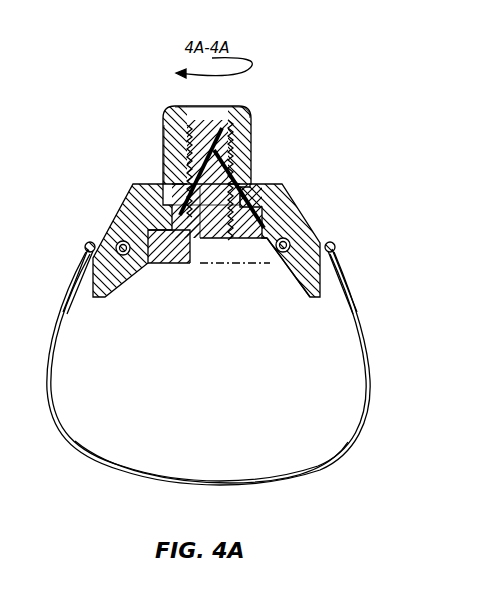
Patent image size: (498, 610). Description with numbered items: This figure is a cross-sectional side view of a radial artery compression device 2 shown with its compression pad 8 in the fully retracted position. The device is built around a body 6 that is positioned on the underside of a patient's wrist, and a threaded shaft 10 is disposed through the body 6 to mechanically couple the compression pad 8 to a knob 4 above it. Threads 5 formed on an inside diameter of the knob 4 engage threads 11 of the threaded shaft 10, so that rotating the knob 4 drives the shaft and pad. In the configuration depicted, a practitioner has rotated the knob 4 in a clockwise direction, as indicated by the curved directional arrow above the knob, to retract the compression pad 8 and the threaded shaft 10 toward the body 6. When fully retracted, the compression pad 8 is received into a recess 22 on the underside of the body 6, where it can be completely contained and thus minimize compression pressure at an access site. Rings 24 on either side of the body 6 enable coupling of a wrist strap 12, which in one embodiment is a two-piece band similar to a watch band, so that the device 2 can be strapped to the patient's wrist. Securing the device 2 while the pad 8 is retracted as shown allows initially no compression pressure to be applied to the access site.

The radial artery compression device 2 is at (251, 93).
The knob 4 is at (248, 126).
The threads 5 is at (236, 140).
The body 6 is at (122, 207).
The compression pad 8 is at (182, 265).
The threaded shaft 10 is at (167, 112).
The threads 11 is at (163, 164).
The wrist strap 12 is at (350, 443).
The recess 22 is at (263, 263).
The rings 24 is at (86, 246).